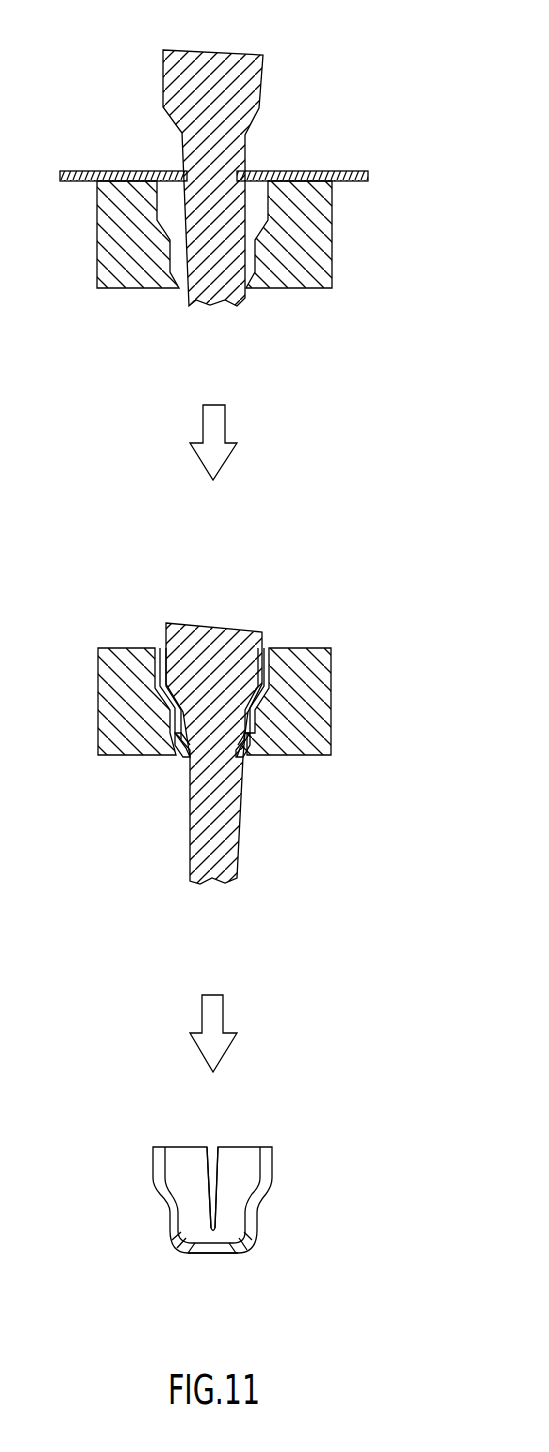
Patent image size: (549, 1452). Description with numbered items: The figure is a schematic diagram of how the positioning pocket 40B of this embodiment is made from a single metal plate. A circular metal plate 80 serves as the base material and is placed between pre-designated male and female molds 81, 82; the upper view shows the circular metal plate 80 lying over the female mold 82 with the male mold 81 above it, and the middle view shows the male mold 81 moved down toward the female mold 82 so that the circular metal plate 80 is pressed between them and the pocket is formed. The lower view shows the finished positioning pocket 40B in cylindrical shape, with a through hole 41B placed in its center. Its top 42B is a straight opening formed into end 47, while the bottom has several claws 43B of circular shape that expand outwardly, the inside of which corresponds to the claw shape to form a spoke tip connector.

The male mold 81 is at (260, 92).
The circular metal plate 80 is at (345, 170).
The female mold 82 is at (332, 235).
The positioning pocket 40B is at (250, 1195).
The through hole 41B is at (187, 1163).
The claws 43B is at (155, 1168).
The end 47 is at (254, 1247).
The top 42B is at (214, 1254).